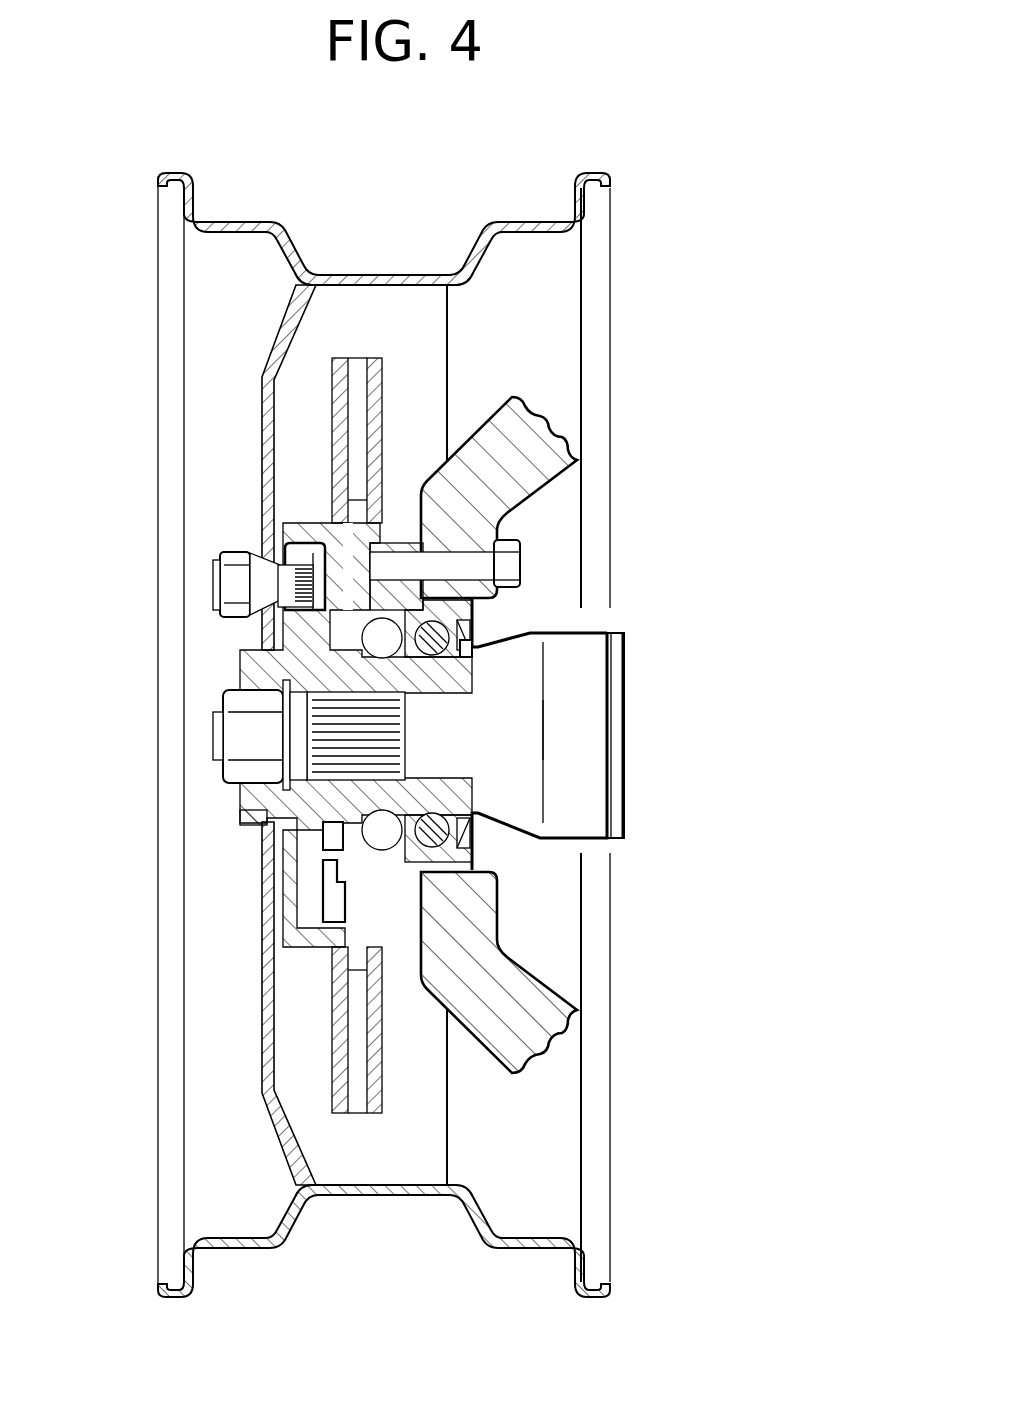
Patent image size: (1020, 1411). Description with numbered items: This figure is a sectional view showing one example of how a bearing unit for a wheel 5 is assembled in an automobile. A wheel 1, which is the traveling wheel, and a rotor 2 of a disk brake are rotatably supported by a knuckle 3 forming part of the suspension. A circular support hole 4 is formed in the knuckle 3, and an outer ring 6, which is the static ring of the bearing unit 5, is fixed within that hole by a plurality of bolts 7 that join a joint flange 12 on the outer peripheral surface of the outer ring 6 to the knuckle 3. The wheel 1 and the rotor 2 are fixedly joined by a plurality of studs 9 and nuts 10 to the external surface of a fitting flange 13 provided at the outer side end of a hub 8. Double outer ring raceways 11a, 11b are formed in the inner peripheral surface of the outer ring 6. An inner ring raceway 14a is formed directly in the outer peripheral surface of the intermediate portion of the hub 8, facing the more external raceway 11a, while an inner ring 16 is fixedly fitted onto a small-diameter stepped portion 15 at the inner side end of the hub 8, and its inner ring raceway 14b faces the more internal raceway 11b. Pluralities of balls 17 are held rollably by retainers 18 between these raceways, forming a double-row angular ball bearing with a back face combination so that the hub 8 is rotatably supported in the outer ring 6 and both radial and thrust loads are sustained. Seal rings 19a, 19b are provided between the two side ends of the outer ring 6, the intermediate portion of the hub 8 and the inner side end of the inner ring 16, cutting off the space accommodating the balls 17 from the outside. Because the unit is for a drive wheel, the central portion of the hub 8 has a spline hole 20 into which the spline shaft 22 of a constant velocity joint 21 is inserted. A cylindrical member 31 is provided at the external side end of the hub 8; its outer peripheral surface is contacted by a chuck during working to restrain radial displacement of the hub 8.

The wheel 1 is at (253, 222).
The rotor 2 is at (373, 357).
The knuckle 3 is at (543, 440).
The support hole 4 is at (460, 872).
The bearing unit for a wheel 5 is at (262, 832).
The outer ring 6 is at (400, 868).
The bolts 7 is at (485, 557).
The hub 8 is at (300, 655).
The studs 9 is at (285, 532).
The nuts 10 is at (233, 585).
The outer ring raceway 11a is at (295, 560).
The outer ring raceway 11b is at (472, 648).
The joint flange 12 is at (408, 542).
The fitting flange 13 is at (308, 882).
The inner ring raceway 14a is at (285, 796).
The inner ring raceway 14b is at (472, 840).
The small-diameter stepped portion 15 is at (478, 655).
The inner ring 16 is at (478, 650).
The balls 17 is at (327, 527).
The retainers 18 is at (392, 638).
The seal ring 19a is at (312, 830).
The seal ring 19b is at (468, 628).
The spline hole 20 is at (230, 757).
The constant velocity joint 21 is at (582, 702).
The spline shaft 22 is at (328, 735).
The cylindrical member 31 is at (248, 818).